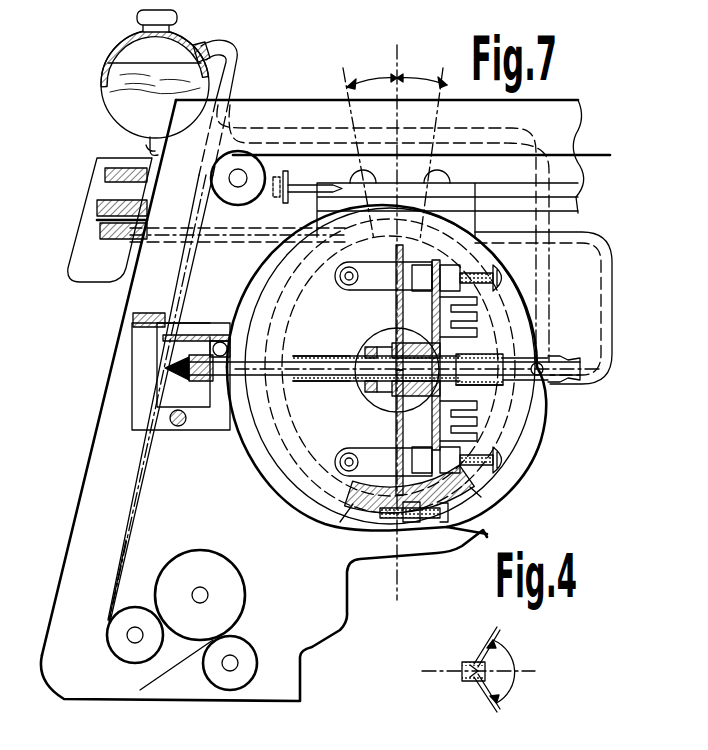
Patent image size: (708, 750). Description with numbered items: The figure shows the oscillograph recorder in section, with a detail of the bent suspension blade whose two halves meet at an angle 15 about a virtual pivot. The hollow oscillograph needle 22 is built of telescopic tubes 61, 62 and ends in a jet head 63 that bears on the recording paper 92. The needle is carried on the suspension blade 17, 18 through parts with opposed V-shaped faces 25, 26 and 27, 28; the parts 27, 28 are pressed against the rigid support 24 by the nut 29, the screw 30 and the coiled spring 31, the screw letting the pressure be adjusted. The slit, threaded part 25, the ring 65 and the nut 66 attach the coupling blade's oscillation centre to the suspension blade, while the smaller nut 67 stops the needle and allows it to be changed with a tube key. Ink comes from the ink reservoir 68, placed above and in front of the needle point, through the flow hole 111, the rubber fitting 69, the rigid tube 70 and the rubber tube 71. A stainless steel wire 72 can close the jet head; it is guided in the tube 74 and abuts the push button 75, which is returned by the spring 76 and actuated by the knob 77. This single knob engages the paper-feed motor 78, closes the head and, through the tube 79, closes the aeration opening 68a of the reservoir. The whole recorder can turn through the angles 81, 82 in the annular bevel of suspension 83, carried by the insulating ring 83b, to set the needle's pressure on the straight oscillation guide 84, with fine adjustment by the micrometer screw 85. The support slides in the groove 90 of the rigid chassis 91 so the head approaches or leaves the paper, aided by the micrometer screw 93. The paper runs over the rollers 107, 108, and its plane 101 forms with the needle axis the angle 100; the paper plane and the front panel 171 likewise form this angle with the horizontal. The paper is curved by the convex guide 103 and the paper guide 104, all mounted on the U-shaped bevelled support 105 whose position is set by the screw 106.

In FIG. 7, the ink reservoir 68 is at (155, 74).
In FIG. 7, the tube 79 is at (227, 46).
In FIG. 7, the flow hole 111 is at (150, 138).
In FIG. 7, the aeration opening 68a is at (128, 170).
In FIG. 7, the push button 75 is at (100, 205).
In FIG. 7, the knob 77 is at (88, 232).
In FIG. 7, the spring 76 is at (123, 237).
In FIG. 7, the roller 107 is at (238, 178).
In FIG. 7, the micrometer screw 93 is at (306, 183).
In FIG. 7, the angle 81 is at (370, 149).
In FIG. 7, the angle 82 is at (420, 149).
In FIG. 7, the groove 90 is at (498, 186).
In FIG. 7, the angle 100 is at (200, 261).
In FIG. 7, the paper guide 104 is at (160, 308).
In FIG. 7, the oscillation guide 84 is at (210, 328).
In FIG. 7, the convex guide 103 is at (190, 338).
In FIG. 7, the stainless steel wire 72 is at (228, 349).
In FIG. 7, the telescopic tube 62 is at (283, 362).
In FIG. 7, the telescopic tube 61 is at (336, 357).
In FIG. 7, the nut 67 is at (386, 345).
In FIG. 7, the nut 29 is at (404, 274).
In FIG. 7, the V-faced part 28 is at (430, 291).
In FIG. 4, the V-faced part 28 is at (466, 662).
In FIG. 7, the ring 65 is at (413, 307).
In FIG. 7, the V-faced part 27 is at (478, 275).
In FIG. 4, the V-faced part 27 is at (491, 675).
In FIG. 7, the screw 30 is at (498, 282).
In FIG. 7, the rubber tube 71 is at (543, 273).
In FIG. 7, the coiled spring 31 is at (470, 312).
In FIG. 7, the suspension blade 17 is at (470, 328).
In FIG. 4, the suspension blade 17 is at (499, 630).
In FIG. 7, the V-faced part 25 is at (445, 352).
In FIG. 7, the rubber fitting 69 is at (490, 364).
In FIG. 7, the tube 74 is at (570, 375).
In FIG. 7, the oscillograph needle 22 is at (300, 381).
In FIG. 7, the jet head 63 is at (180, 373).
In FIG. 7, the nut 66 is at (392, 398).
In FIG. 7, the V-faced part 26 is at (402, 409).
In FIG. 7, the rigid tube 70 is at (506, 392).
In FIG. 7, the suspension blade 18 is at (470, 424).
In FIG. 4, the suspension blade 18 is at (500, 707).
In FIG. 7, the annular bevel of suspension 83 is at (533, 422).
In FIG. 7, the ring 83b is at (520, 452).
In FIG. 7, the rigid support 24 is at (418, 461).
In FIG. 7, the micrometer screw 85 is at (452, 512).
In FIG. 7, the screw 106 is at (186, 418).
In FIG. 7, the U-shaped bevelled support 105 is at (188, 430).
In FIG. 7, the front panel 171 is at (95, 437).
In FIG. 7, the plane of the paper 101 is at (150, 455).
In FIG. 7, the recording paper 92 is at (140, 493).
In FIG. 7, the rigid chassis 91 is at (325, 400).
In FIG. 7, the motor 78 is at (200, 595).
In FIG. 7, the roller 108 is at (135, 635).
In FIG. 4, the angle 15 is at (512, 654).